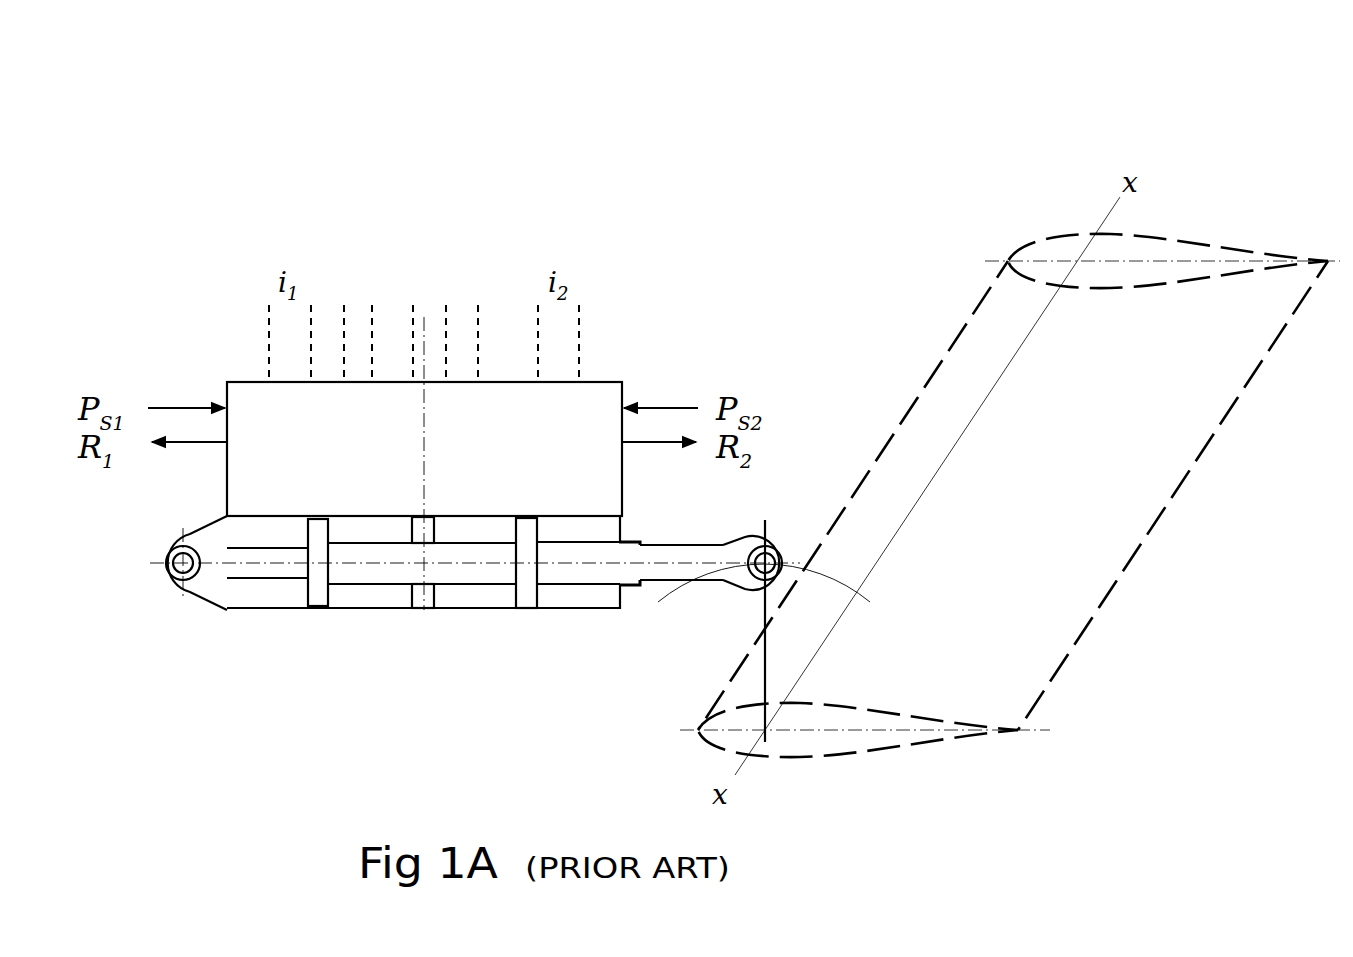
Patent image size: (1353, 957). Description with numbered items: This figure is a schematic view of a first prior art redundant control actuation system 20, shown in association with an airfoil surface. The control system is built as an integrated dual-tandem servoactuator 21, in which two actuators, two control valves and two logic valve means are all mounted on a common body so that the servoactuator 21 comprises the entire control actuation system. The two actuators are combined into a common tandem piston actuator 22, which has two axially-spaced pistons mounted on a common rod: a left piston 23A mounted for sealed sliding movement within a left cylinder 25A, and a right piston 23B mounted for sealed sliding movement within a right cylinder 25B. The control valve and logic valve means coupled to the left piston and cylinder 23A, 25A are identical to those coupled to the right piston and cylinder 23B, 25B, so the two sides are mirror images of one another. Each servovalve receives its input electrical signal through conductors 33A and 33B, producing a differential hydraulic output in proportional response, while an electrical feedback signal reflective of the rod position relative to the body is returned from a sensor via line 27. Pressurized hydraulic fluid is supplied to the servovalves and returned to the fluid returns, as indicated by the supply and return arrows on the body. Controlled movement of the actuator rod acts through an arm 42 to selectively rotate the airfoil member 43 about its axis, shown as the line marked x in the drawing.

The redundant control actuation system 20 is at (643, 213).
The dual-tandem servoactuator 21 is at (622, 380).
The tandem piston actuator 22 is at (425, 640).
The left piston 23A is at (317, 599).
The right piston 23B is at (535, 610).
The left cylinder 25A is at (280, 605).
The right cylinder 25B is at (615, 605).
The line 27 is at (343, 308).
The conductors 33A is at (413, 308).
The conductors 33B is at (448, 308).
The arm 42 is at (770, 656).
The airfoil member 43 is at (994, 471).